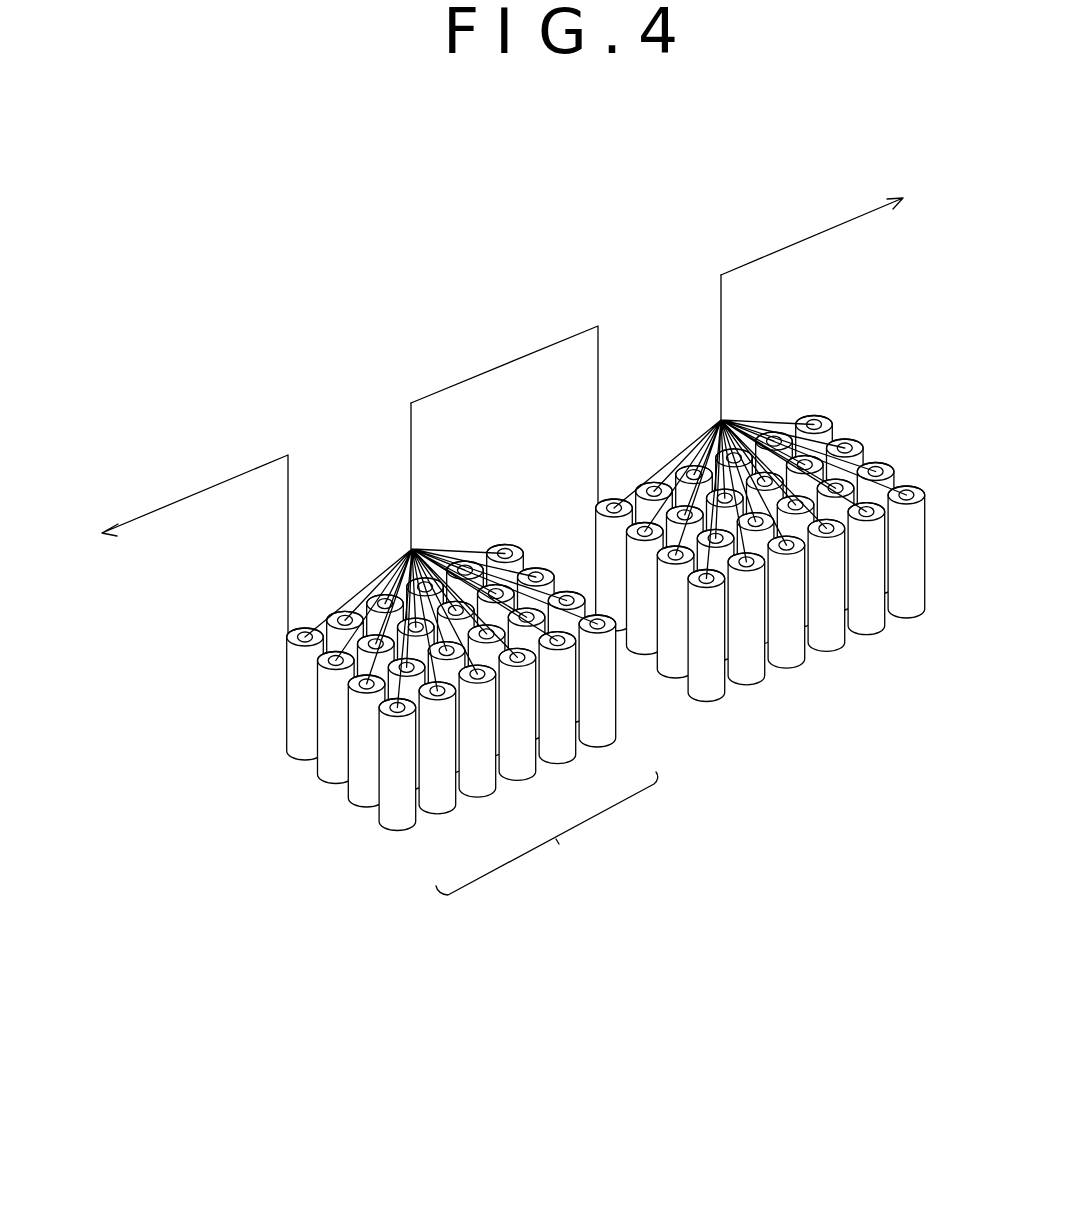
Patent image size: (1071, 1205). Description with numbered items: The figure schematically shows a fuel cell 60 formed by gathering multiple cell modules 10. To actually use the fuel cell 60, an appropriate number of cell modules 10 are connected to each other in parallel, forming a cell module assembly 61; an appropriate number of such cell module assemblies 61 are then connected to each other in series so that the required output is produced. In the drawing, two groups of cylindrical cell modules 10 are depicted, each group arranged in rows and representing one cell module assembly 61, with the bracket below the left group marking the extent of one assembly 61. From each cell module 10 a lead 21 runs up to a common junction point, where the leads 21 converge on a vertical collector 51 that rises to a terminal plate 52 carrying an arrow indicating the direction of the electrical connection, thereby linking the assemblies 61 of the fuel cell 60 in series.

The cell module 10 is at (596, 735).
The lead wire 21 is at (360, 591).
The collector bar 51 is at (411, 508).
The terminal plate 52 is at (288, 578).
The fuel cell 60 is at (684, 939).
The cell module assembly 61 is at (547, 833).